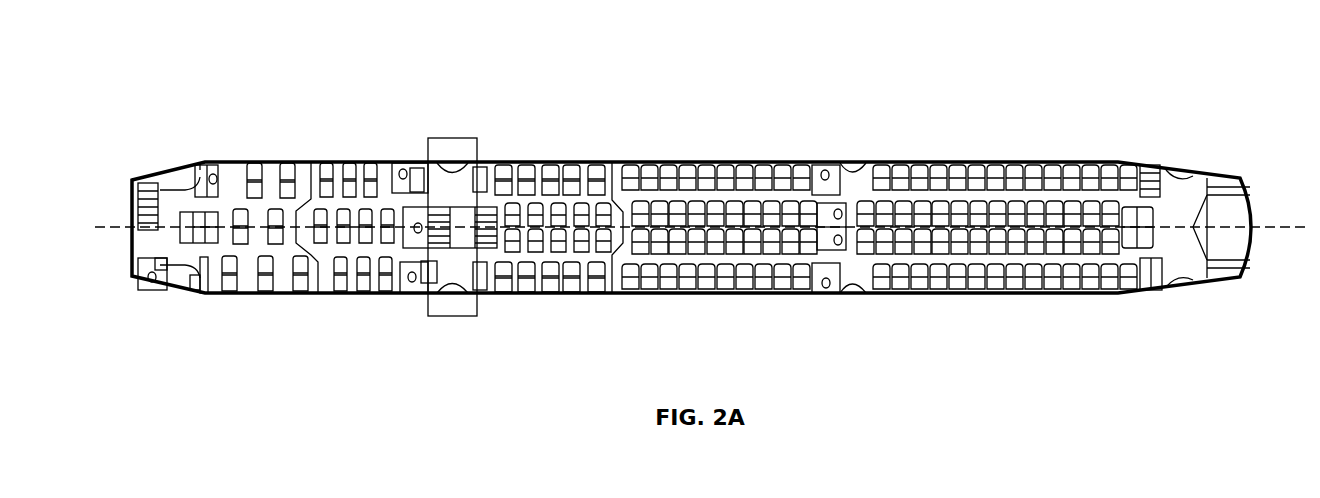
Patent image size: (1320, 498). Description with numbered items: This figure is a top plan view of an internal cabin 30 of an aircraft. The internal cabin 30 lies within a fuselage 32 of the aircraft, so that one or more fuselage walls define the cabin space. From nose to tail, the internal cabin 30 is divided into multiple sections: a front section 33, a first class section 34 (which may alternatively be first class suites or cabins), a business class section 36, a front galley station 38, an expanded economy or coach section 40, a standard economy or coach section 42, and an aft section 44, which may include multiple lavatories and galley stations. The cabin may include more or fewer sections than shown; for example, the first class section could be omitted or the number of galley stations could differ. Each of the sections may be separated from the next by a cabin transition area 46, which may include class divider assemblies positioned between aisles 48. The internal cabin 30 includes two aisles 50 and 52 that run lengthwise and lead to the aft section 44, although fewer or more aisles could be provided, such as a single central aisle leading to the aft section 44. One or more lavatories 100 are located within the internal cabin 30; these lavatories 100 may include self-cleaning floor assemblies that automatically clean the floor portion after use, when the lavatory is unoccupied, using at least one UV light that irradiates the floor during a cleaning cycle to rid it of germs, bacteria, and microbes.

The internal cabin 30 is at (262, 73).
The fuselage 32 is at (567, 98).
The front section 33 is at (188, 304).
The first class section 34 is at (273, 294).
The business class section 36 is at (340, 162).
The front galley station 38 is at (455, 316).
The expanded economy or coach section 40 is at (545, 294).
The standard economy or coach section 42 is at (665, 160).
The aft section 44 is at (1185, 185).
The cabin transition area 46 is at (200, 161).
The aisles 48 is at (437, 193).
The aisle 50 is at (995, 194).
The aisle 52 is at (1012, 262).
The lavatory 100 is at (412, 226).